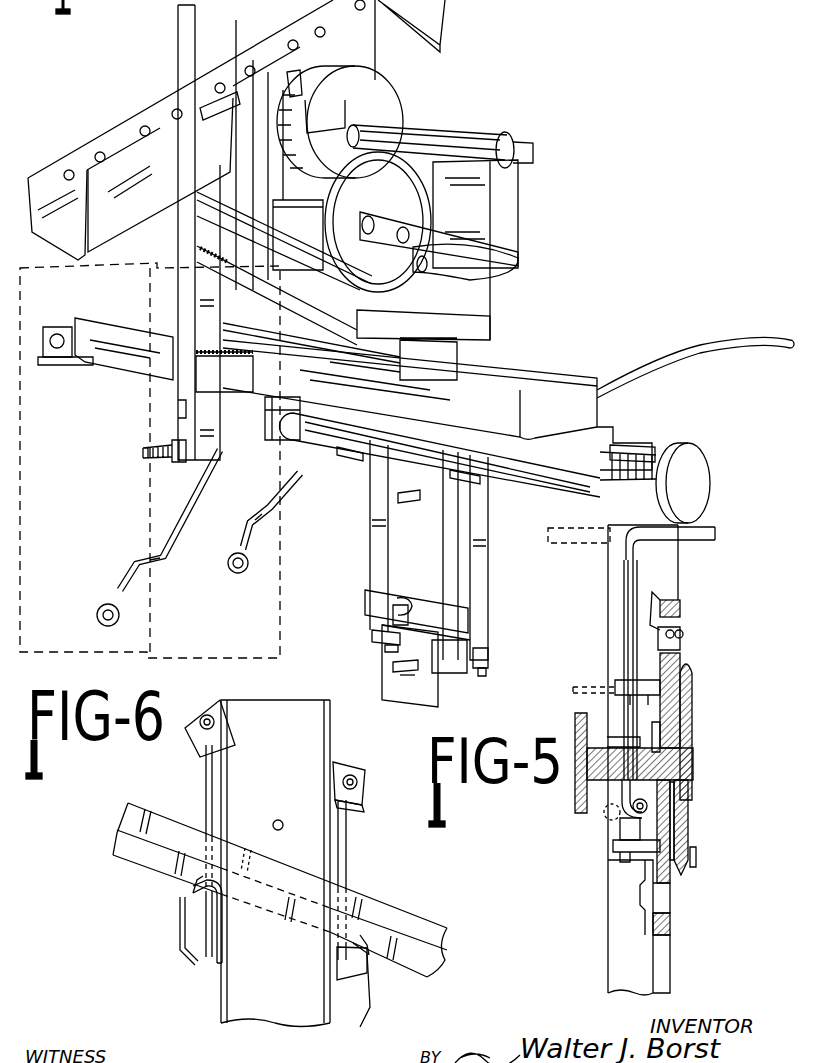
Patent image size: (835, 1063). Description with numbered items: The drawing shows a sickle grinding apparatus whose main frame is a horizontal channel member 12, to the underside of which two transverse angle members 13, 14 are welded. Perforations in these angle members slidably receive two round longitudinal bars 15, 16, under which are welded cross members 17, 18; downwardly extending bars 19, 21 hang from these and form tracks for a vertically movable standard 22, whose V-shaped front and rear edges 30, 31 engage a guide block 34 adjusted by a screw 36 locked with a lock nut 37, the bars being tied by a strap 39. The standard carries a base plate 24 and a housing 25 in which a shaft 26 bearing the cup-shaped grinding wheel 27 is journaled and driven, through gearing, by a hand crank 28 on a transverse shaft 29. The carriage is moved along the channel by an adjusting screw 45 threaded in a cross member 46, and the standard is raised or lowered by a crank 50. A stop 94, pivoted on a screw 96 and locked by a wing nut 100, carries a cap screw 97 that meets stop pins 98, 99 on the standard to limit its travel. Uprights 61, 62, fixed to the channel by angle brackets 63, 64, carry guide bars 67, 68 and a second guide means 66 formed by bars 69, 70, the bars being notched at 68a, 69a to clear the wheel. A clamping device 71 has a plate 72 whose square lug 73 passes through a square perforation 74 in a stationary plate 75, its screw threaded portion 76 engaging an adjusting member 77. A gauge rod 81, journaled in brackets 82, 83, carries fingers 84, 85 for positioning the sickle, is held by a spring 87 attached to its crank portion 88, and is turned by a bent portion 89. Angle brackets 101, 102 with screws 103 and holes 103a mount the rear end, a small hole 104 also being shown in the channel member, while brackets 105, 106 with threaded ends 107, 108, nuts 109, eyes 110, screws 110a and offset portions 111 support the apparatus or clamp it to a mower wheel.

In FIG. 1, the channel member 12 is at (563, 390).
In FIG. 6, the channel member 12 is at (265, 1005).
In FIG. 1, the angle member 13 is at (275, 432).
In FIG. 1, the angle member 14 is at (601, 435).
In FIG. 1, the longitudinally extending bar 15 is at (418, 450).
In FIG. 1, the longitudinally extending bar 16 is at (617, 443).
In FIG. 1, the cross member 17 is at (358, 455).
In FIG. 1, the cross member 18 is at (480, 479).
In FIG. 1, the bar 19 is at (372, 634).
In FIG. 1, the bar 21 is at (473, 573).
In FIG. 1, the standard 22 is at (405, 543).
In FIG. 1, the base plate 24 is at (500, 332).
In FIG. 1, the housing 25 is at (500, 230).
In FIG. 1, the shaft 26 is at (534, 152).
In FIG. 1, the grinding wheel 27 is at (293, 74).
In FIG. 1, the hand crank 28 is at (440, 235).
In FIG. 1, the transverse shaft 29 is at (371, 217).
In FIG. 1, the front edge 30 is at (448, 699).
In FIG. 1, the rear edge 31 is at (382, 688).
In FIG. 1, the guide block 34 is at (453, 662).
In FIG. 1, the screw 36 is at (489, 657).
In FIG. 1, the lock nut 37 is at (487, 670).
In FIG. 1, the strap 39 is at (375, 602).
In FIG. 1, the adjusting screw 45 is at (635, 473).
In FIG. 1, the cross member 46 is at (593, 473).
In FIG. 1, the crank 50 is at (718, 323).
In FIG. 1, the upright 61 is at (187, 280).
In FIG. 6, the upright 61 is at (207, 920).
In FIG. 1, the upright 62 is at (345, 313).
In FIG. 5, the upright 62 is at (620, 937).
In FIG. 6, the upright 62 is at (353, 982).
In FIG. 1, the angle bracket 63 is at (210, 378).
In FIG. 6, the angle bracket 63 is at (183, 930).
In FIG. 6, the angle bracket 64 is at (347, 1009).
In FIG. 1, the guide means 66 is at (243, 274).
In FIG. 5, the bar 67 is at (668, 580).
In FIG. 5, the bar 68 is at (665, 650).
In FIG. 5, the notch 68a is at (660, 602).
In FIG. 5, the bar 69 is at (667, 898).
In FIG. 1, the notch 69a is at (312, 272).
In FIG. 5, the notch 69a is at (670, 917).
In FIG. 5, the bar 70 is at (665, 970).
In FIG. 1, the clamping device 71 is at (245, 146).
In FIG. 5, the clamping device 71 is at (699, 753).
In FIG. 6, the clamping device 71 is at (423, 940).
In FIG. 1, the plate 72 is at (273, 224).
In FIG. 5, the plate 72 is at (686, 807).
In FIG. 5, the lug 73 is at (665, 753).
In FIG. 5, the square perforation 74 is at (690, 781).
In FIG. 5, the stationary plate 75 is at (682, 827).
In FIG. 5, the screw threaded portion 76 is at (620, 738).
In FIG. 5, the adjusting member 77 is at (578, 783).
In FIG. 5, the rod 81 is at (624, 598).
In FIG. 5, the bracket 82 is at (645, 682).
In FIG. 5, the bracket 83 is at (638, 855).
In FIG. 5, the finger 84 is at (590, 683).
In FIG. 5, the finger 85 is at (690, 848).
In FIG. 5, the spring 87 is at (622, 812).
In FIG. 5, the crank portion 88 is at (622, 842).
In FIG. 1, the bent portion 89 is at (580, 535).
In FIG. 5, the bent portion 89 is at (705, 535).
In FIG. 1, the stop 94 is at (385, 649).
In FIG. 1, the screw 96 is at (392, 609).
In FIG. 1, the cap screw 97 is at (408, 670).
In FIG. 1, the stop pin 98 is at (407, 678).
In FIG. 1, the stop pin 99 is at (398, 497).
In FIG. 1, the wing nut 100 is at (407, 600).
In FIG. 1, the angle bracket 101 is at (43, 337).
In FIG. 6, the angle bracket 101 is at (193, 725).
In FIG. 6, the angle bracket 102 is at (362, 794).
In FIG. 1, the screw 103 is at (57, 336).
In FIG. 1, the hole 103a is at (67, 364).
In FIG. 6, the hole 104 is at (287, 818).
In FIG. 1, the bracket 105 is at (170, 558).
In FIG. 6, the bracket 105 is at (208, 770).
In FIG. 1, the bracket 106 is at (253, 542).
In FIG. 6, the bracket 106 is at (348, 853).
In FIG. 1, the threaded end 107 is at (143, 455).
In FIG. 6, the threaded end 107 is at (205, 716).
In FIG. 6, the threaded end 108 is at (362, 780).
In FIG. 1, the nut 109 is at (176, 461).
In FIG. 6, the nut 109 is at (214, 718).
In FIG. 1, the eye 110 is at (100, 612).
In FIG. 1, the screw 110a is at (105, 620).
In FIG. 1, the offset portion 111 is at (147, 557).
In FIG. 6, the offset portion 111 is at (190, 891).